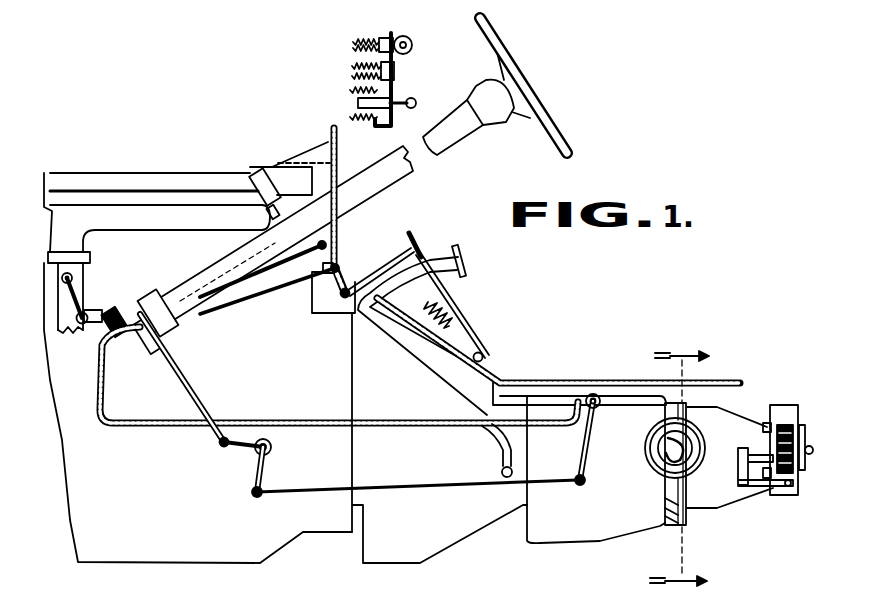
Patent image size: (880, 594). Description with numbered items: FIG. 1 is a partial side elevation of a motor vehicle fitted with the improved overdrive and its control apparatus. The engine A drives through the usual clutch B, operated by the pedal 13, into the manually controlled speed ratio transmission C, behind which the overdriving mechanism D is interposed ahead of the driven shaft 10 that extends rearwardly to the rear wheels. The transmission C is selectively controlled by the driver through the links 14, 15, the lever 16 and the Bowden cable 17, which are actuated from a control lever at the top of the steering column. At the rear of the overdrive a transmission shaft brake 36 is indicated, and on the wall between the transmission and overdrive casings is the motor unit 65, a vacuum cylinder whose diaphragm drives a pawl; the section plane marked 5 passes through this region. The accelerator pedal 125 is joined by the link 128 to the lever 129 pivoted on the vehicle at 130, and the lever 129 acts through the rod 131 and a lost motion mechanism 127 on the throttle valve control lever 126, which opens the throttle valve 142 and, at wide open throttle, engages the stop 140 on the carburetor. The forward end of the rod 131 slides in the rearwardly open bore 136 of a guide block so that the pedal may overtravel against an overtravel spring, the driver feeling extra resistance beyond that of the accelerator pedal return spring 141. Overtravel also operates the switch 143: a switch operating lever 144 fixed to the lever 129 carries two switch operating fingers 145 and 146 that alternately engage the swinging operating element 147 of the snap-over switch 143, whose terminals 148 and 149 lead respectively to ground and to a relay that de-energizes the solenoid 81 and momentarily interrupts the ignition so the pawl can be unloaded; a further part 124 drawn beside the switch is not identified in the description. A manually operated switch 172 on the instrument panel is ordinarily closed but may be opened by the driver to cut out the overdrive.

The engine A is at (156, 178).
The clutch B is at (402, 562).
The speed ratio transmission C is at (574, 535).
The overdriving mechanism D is at (718, 503).
The section line 5- 5 is at (691, 467).
The driven shaft 10 is at (808, 393).
The pedal 13 is at (465, 263).
The link 14 is at (192, 378).
The link 15 is at (436, 487).
The lever 16 is at (592, 447).
The Bowden cable 17 is at (395, 420).
The transmission shaft brake 36 is at (772, 488).
The motor unit 65 is at (658, 479).
The solenoid 81 is at (686, 481).
The contact bar 124 is at (392, 33).
The accelerator pedal 125 is at (418, 244).
The throttle valve control lever 126 is at (91, 286).
The lost motion mechanism 127 is at (98, 328).
The link 128 is at (397, 268).
The lever 129 is at (341, 260).
The pivot 130 is at (330, 243).
The rod 131 is at (283, 286).
The rearwardly open bore 136 is at (397, 71).
The stop 140 is at (37, 330).
The accelerator pedal return spring 141 is at (470, 318).
The throttle valve 142 is at (96, 262).
The switch 143 is at (278, 175).
The switch operating lever 144 is at (306, 271).
The switch operating finger 145 is at (246, 245).
The switch operating finger 146 is at (311, 217).
The swinging operating element 147 is at (262, 216).
The terminal 148 is at (252, 183).
The terminal 149 is at (262, 170).
The switch 172 is at (358, 103).